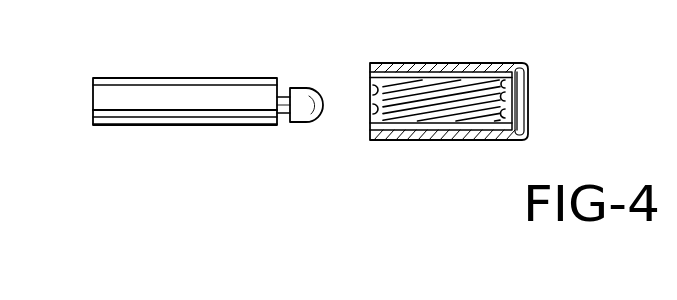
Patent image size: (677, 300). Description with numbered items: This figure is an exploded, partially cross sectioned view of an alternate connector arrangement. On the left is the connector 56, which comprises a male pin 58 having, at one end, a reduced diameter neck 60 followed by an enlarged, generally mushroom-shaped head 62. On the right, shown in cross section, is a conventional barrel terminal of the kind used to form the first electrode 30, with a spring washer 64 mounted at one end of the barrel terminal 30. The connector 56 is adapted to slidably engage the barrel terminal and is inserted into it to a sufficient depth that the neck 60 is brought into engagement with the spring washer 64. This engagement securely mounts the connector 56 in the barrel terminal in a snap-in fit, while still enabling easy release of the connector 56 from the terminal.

The first electrode 30 is at (490, 75).
The connector 56 is at (228, 109).
The male pin 58 is at (116, 118).
The reduced diameter neck 60 is at (287, 117).
The mushroom-shaped head 62 is at (311, 114).
The spring washer 64 is at (520, 112).